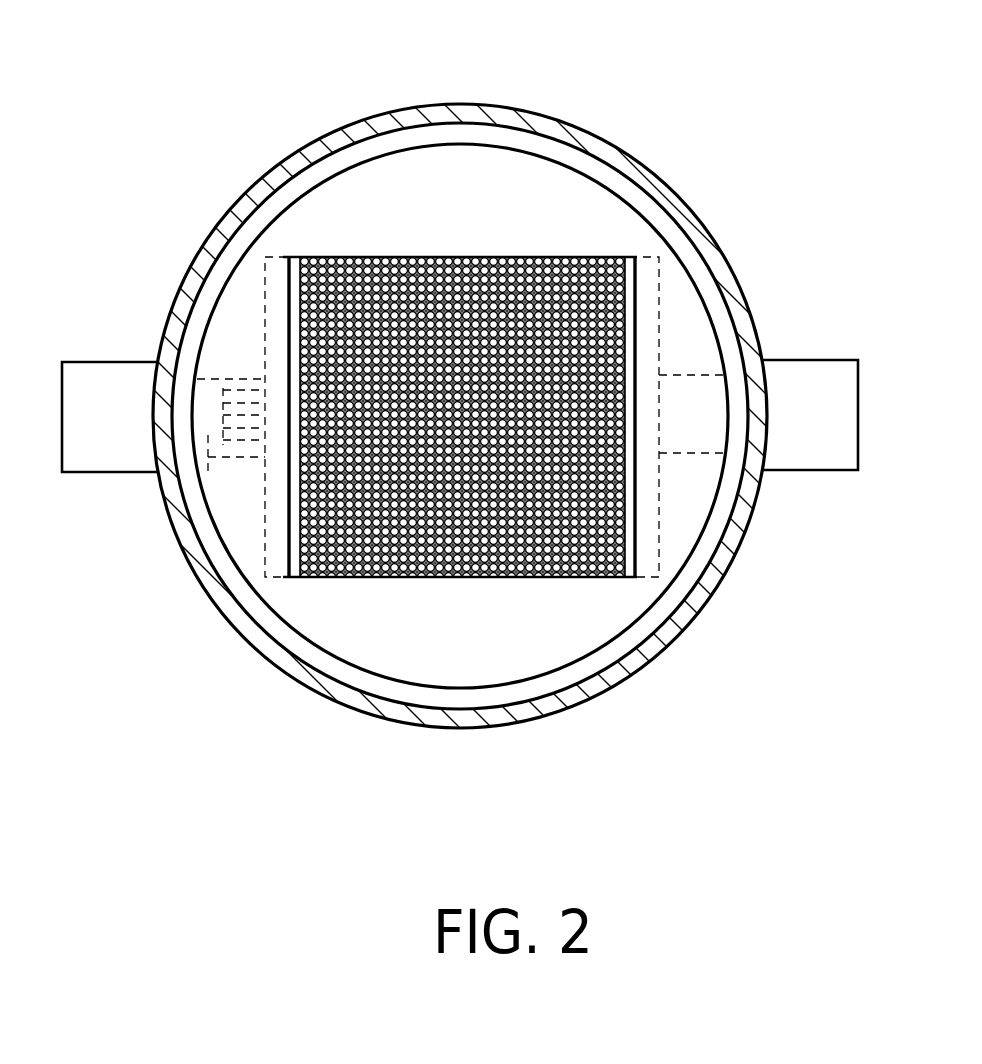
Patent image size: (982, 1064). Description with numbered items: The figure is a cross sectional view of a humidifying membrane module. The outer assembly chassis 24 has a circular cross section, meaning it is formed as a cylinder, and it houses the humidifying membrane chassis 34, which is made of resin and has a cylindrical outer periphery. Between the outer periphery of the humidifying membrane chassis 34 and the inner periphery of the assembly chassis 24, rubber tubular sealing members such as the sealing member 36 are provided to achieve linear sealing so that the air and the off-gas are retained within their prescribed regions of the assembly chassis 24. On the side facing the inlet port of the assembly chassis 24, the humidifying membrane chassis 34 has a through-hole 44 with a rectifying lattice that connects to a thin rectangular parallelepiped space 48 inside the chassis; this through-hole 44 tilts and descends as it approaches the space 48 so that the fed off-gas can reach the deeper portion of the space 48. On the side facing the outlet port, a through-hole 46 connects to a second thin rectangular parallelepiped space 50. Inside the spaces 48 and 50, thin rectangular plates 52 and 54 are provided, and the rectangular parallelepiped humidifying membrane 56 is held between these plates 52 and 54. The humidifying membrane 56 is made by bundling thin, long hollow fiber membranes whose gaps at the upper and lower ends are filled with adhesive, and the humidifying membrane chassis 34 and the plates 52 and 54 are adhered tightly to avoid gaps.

The assembly chassis 24 is at (268, 170).
The humidifying membrane chassis 34 is at (477, 177).
The tubular sealing member 36 is at (367, 150).
The through-hole with a rectifying lattice 44 is at (206, 470).
The through-hole 46 is at (648, 522).
The thin rectangular parallelepiped space 48 is at (293, 543).
The thin rectangular parallelepiped space 50 is at (717, 498).
The thin rectangular plate 52 is at (293, 578).
The thin rectangular plate 54 is at (632, 548).
The humidifying membrane 56 is at (547, 263).